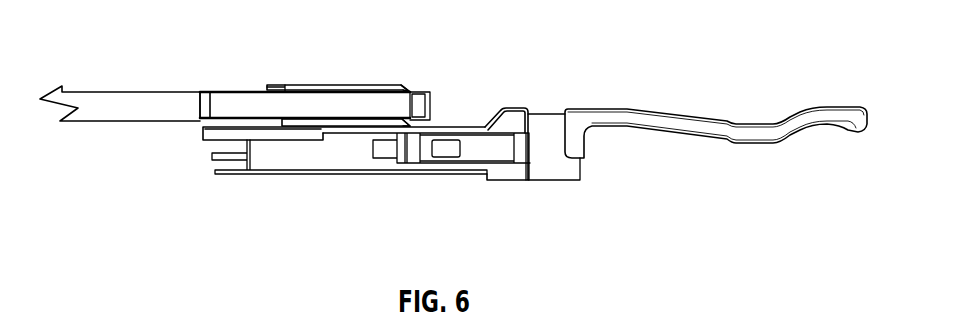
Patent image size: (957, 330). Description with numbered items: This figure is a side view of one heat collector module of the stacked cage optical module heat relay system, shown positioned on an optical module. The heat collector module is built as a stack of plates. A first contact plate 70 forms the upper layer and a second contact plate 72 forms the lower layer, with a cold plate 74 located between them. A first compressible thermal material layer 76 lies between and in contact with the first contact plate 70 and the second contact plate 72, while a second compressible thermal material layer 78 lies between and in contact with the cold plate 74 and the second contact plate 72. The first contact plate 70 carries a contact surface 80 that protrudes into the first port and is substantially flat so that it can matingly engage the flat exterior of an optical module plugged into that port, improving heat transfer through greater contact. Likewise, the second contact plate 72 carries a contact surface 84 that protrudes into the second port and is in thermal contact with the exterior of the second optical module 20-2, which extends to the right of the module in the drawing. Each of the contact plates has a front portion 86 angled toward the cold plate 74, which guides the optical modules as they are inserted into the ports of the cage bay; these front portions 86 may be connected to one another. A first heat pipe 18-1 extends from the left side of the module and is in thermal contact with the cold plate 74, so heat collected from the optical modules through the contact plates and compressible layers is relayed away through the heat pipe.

The first heat pipe 18-1 is at (112, 97).
The cold plate 74 is at (197, 108).
The first contact plate 70 is at (325, 85).
The first compressible thermal material layer 76 is at (285, 90).
The contact surface 80 is at (378, 85).
The front portion 86 is at (407, 88).
The second contact plate 72 is at (275, 128).
The second compressible thermal material layer 78 is at (322, 121).
The contact surface 84 is at (338, 127).
The second optical module 20-2 is at (702, 115).